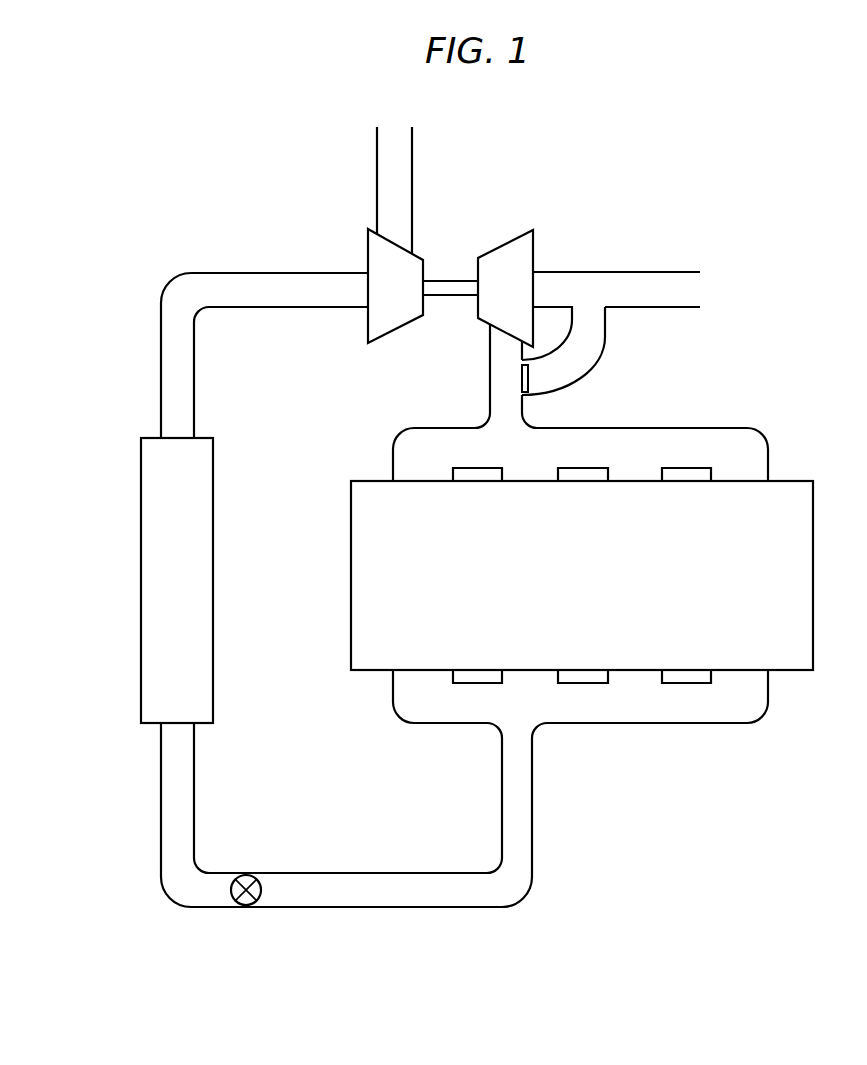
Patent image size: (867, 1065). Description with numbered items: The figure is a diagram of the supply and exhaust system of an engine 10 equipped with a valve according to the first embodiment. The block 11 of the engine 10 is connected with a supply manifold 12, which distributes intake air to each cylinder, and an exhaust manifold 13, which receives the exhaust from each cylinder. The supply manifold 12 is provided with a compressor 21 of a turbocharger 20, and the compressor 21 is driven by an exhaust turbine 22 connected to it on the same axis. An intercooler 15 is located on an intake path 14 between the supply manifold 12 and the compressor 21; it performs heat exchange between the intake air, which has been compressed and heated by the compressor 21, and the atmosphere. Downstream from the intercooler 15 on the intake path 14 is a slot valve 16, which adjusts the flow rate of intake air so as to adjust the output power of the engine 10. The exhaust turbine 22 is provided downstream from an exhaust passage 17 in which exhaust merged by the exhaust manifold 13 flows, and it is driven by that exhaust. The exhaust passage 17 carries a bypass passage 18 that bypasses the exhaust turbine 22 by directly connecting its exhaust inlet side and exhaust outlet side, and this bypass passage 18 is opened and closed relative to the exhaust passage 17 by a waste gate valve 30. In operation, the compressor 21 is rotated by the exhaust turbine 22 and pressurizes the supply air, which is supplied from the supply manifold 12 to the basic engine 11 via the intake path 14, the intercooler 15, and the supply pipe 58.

The engine 10 is at (680, 872).
The block 11 is at (365, 539).
The supply manifold 12 is at (636, 712).
The exhaust manifold 13 is at (722, 438).
The intake path 14 is at (170, 783).
The intercooler 15 is at (150, 535).
The slot valve 16 is at (246, 898).
The exhaust passage 17 is at (500, 405).
The bypass passage 18 is at (595, 327).
The turbocharger 20 is at (468, 220).
The compressor 21 is at (380, 254).
The exhaust turbine 22 is at (530, 258).
The waste gate valve 30 is at (528, 378).
The supply pipe 58 is at (503, 808).